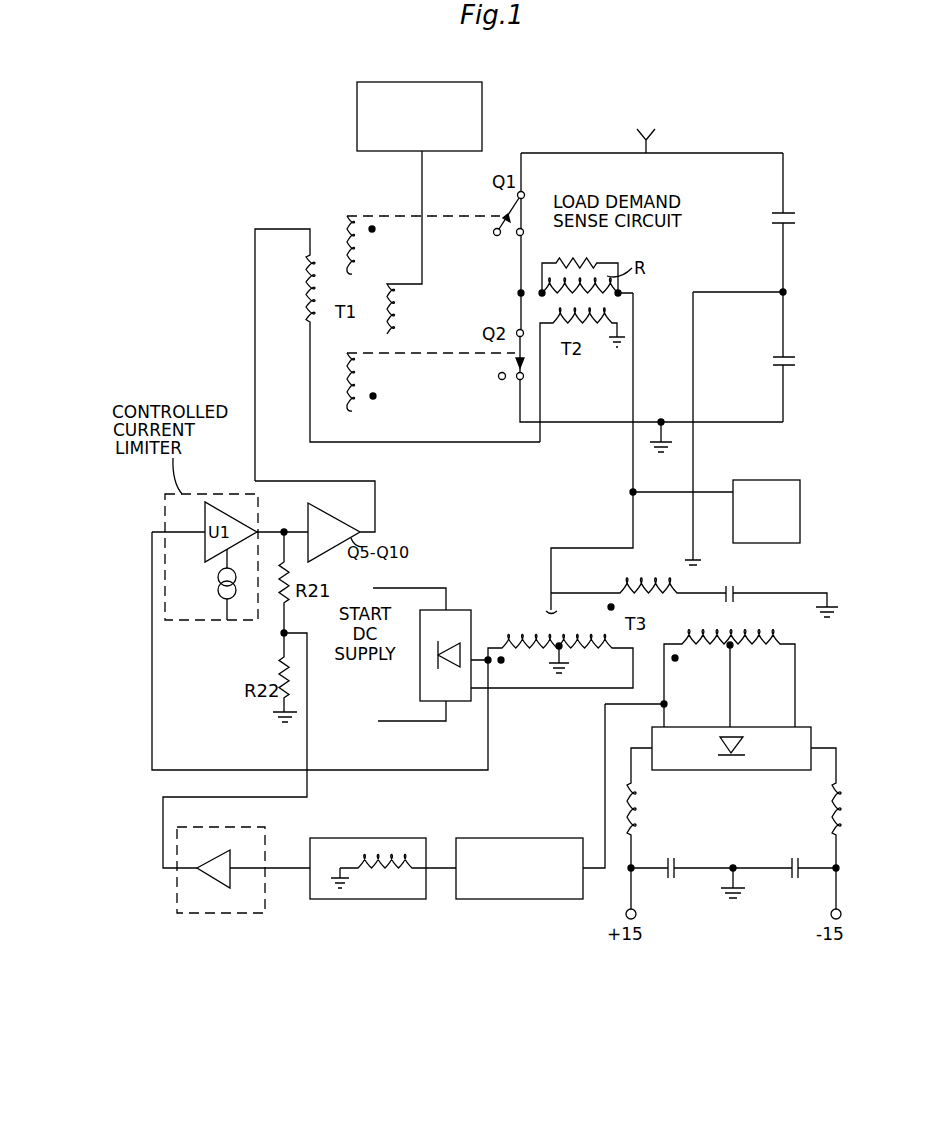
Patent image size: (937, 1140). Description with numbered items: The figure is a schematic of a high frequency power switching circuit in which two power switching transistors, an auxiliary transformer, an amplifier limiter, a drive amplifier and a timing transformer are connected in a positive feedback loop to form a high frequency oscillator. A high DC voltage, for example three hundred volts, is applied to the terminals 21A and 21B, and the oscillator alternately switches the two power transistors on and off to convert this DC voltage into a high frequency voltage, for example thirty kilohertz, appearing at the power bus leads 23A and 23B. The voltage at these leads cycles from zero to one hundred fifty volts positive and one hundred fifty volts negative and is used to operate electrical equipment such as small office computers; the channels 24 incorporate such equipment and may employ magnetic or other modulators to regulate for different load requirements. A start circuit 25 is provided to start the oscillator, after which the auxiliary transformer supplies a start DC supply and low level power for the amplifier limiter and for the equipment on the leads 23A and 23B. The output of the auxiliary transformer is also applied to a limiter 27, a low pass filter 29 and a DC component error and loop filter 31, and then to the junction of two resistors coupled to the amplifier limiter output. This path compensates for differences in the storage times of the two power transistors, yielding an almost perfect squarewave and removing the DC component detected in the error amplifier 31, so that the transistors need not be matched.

The terminal 21A is at (655, 134).
The terminal 21B is at (647, 452).
The power bus lead 23A is at (633, 393).
The power bus lead 23B is at (694, 391).
The channels 24 is at (758, 545).
The start circuit 25 is at (482, 101).
The limiter 27 is at (506, 838).
The low pass filter 29 is at (366, 838).
The DC component error and loop filter 31 is at (258, 827).